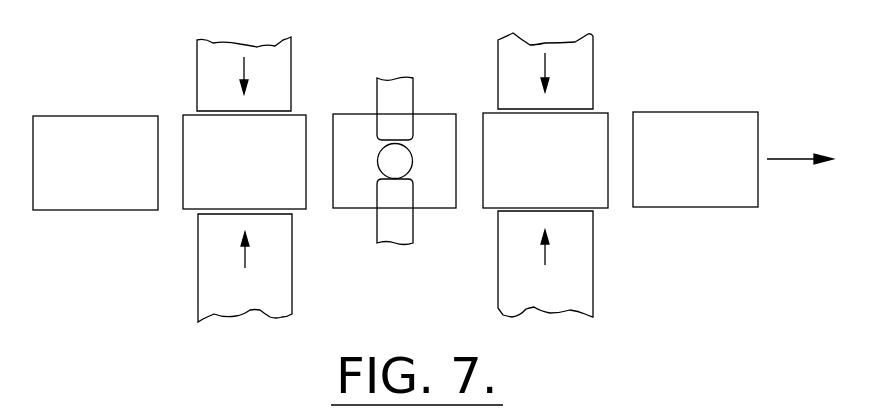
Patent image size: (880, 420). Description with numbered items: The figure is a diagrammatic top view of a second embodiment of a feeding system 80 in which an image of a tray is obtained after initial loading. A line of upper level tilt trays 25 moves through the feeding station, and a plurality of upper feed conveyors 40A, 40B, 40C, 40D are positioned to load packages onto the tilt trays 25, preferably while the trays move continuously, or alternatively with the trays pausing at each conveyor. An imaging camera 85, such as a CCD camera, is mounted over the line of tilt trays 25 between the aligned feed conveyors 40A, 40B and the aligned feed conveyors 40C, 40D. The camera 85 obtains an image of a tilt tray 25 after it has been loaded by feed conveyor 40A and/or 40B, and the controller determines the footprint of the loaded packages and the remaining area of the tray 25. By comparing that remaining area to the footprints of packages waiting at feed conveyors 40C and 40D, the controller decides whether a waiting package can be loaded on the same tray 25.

The upper level tilt tray 25 is at (83, 127).
The upper feed conveyor 40A is at (283, 280).
The upper feed conveyor 40B is at (280, 70).
The upper feed conveyor 40C is at (580, 278).
The upper feed conveyor 40D is at (578, 68).
The feeding system 80 is at (142, 273).
The imaging camera 85 is at (392, 160).